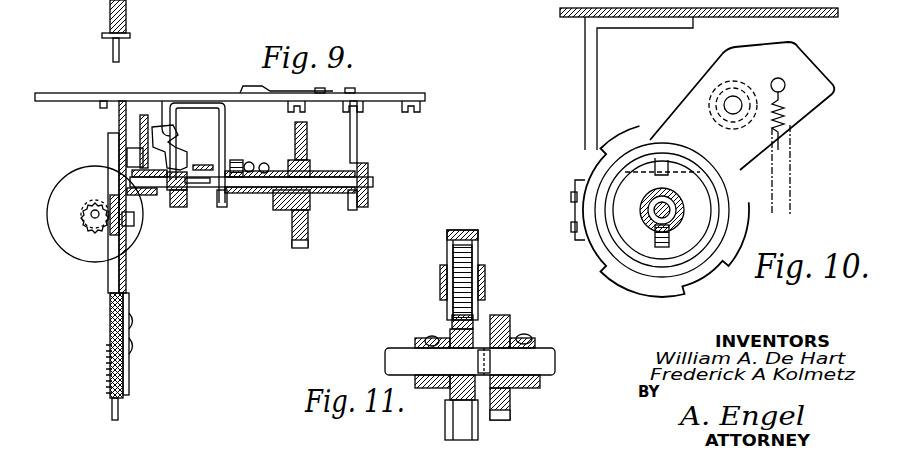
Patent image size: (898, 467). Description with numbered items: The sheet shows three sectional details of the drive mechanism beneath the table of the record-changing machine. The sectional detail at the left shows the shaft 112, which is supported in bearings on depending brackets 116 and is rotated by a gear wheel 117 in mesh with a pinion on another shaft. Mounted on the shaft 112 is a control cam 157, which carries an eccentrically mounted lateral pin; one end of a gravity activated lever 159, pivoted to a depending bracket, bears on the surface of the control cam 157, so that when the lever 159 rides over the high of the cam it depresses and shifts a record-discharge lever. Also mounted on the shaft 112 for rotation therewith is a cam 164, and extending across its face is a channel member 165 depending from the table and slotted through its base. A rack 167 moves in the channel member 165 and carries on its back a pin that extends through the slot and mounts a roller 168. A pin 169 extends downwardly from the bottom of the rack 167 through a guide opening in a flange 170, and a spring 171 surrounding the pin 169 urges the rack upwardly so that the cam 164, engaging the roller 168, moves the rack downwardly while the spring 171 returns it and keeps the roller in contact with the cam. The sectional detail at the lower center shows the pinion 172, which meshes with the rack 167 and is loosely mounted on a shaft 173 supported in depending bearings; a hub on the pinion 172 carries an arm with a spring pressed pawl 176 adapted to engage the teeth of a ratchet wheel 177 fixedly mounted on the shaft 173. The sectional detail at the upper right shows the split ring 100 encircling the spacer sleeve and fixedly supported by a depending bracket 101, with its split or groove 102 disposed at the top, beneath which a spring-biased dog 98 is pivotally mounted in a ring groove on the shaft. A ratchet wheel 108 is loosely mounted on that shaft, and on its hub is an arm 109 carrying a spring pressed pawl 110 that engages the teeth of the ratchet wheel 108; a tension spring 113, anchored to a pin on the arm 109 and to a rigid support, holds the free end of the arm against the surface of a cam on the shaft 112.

In FIG. 10, the dog 98 is at (642, 150).
In FIG. 10, the split ring 100 is at (745, 246).
In FIG. 10, the depending bracket 101 is at (592, 52).
In FIG. 10, the split or groove 102 is at (655, 138).
In FIG. 10, the ratchet wheel 108 is at (748, 218).
In FIG. 10, the arm 109 is at (805, 58).
In FIG. 10, the spring pressed pawl 110 is at (755, 167).
In FIG. 9, the shaft 112 is at (297, 180).
In FIG. 10, the tension spring 113 is at (795, 125).
In FIG. 9, the depending brackets 116 is at (226, 135).
In FIG. 9, the gear wheel 117 is at (308, 228).
In FIG. 9, the control cam 157 is at (186, 198).
In FIG. 9, the gravity activated lever 159 is at (172, 140).
In FIG. 9, the cam 164 is at (163, 222).
In FIG. 11, the channel member 165 is at (475, 232).
In FIG. 9, the rack 167 is at (110, 243).
In FIG. 11, the rack 167 is at (465, 262).
In FIG. 9, the roller 168 is at (138, 252).
In FIG. 9, the pin 169 is at (112, 418).
In FIG. 9, the flange 170 is at (112, 392).
In FIG. 9, the spring 171 is at (110, 370).
In FIG. 9, the pinion 172 is at (82, 236).
In FIG. 11, the pinion 172 is at (468, 318).
In FIG. 11, the shaft 173 is at (545, 350).
In FIG. 11, the spring pressed pawl 176 is at (491, 358).
In FIG. 11, the ratchet wheel 177 is at (500, 315).